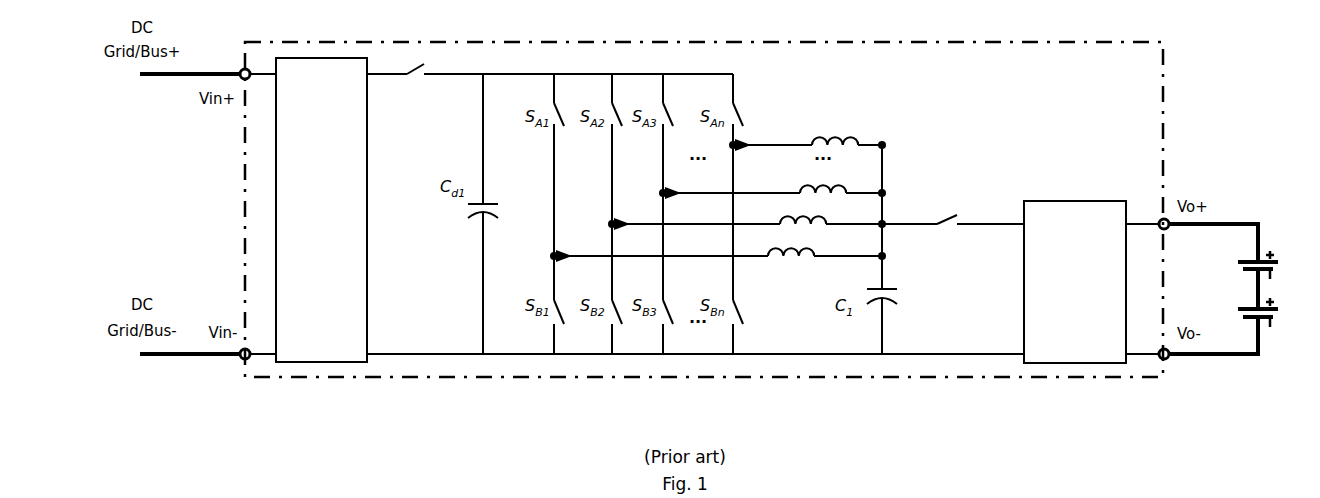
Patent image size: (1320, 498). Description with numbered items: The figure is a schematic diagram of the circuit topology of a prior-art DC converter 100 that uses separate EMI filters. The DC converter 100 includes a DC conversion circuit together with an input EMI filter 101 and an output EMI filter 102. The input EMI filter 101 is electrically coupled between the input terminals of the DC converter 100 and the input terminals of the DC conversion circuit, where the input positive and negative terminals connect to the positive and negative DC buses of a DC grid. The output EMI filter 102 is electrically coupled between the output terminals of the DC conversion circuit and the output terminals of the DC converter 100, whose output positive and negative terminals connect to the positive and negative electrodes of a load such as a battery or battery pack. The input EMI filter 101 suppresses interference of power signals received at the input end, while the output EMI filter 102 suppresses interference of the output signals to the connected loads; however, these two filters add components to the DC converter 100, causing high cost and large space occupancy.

The DC converter 100 is at (753, 209).
The input EMI filter 101 is at (321, 210).
The output EMI filter 102 is at (1075, 282).